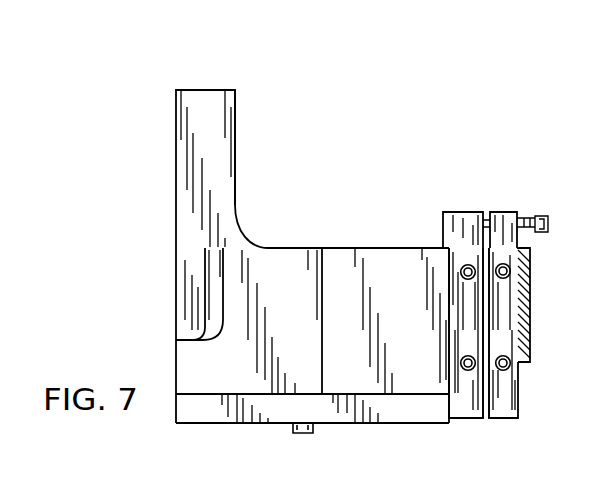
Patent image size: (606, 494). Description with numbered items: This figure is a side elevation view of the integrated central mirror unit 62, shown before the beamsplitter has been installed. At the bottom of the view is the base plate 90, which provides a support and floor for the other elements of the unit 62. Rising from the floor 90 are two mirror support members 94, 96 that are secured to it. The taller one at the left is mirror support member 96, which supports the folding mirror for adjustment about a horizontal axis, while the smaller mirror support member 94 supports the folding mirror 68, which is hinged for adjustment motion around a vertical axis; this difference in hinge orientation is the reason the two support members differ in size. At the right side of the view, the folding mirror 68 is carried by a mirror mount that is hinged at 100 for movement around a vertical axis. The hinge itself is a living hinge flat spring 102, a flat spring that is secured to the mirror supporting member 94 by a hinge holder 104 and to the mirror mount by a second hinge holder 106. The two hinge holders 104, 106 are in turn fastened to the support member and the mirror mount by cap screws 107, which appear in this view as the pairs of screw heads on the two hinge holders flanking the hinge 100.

The integrated central mirror unit 62 is at (327, 231).
The folding mirror 68 is at (526, 315).
The base plate 90 is at (240, 413).
The mirror support member 94 is at (397, 265).
The mirror support member 96 is at (276, 258).
The hinge 100 is at (487, 425).
The living hinge flat spring 102 is at (487, 398).
The hinge holder 104 is at (466, 407).
The hinge holder 106 is at (512, 410).
The cap screws 107 is at (510, 265).